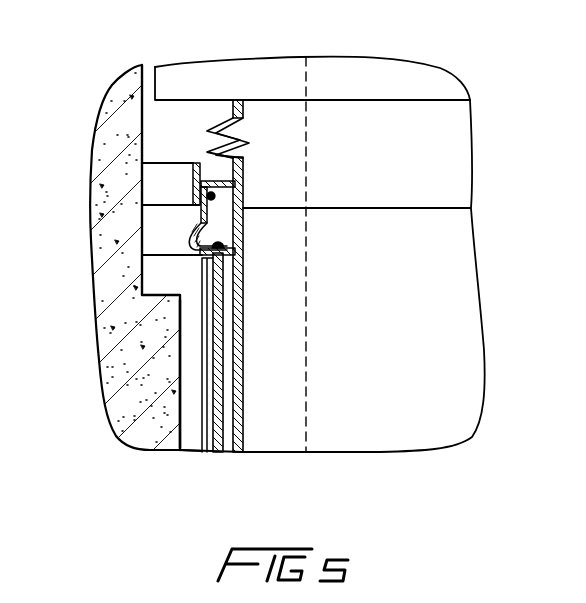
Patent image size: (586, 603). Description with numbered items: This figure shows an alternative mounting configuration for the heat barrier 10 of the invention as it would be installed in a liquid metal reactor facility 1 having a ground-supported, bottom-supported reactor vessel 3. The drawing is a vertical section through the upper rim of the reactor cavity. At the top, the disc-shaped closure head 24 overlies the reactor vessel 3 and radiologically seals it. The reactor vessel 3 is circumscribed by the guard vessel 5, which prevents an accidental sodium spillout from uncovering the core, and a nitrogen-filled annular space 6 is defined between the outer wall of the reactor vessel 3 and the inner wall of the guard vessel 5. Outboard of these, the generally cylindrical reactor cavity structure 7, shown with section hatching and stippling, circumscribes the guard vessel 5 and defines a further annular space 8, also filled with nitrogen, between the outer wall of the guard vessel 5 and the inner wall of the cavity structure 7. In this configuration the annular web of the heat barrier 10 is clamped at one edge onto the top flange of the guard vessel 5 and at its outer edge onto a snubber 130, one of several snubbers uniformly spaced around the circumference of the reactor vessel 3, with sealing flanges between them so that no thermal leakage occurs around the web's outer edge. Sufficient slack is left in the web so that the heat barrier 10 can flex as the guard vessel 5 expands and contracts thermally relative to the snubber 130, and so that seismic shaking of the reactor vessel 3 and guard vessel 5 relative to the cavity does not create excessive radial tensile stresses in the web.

The liquid metal reactor facility 1 is at (100, 99).
The closure head 24 is at (270, 70).
The reactor vessel 3 is at (240, 408).
The guard vessel 5 is at (215, 322).
The annular space 6 is at (228, 328).
The reactor cavity structure 7 is at (181, 380).
The annular space 8 is at (192, 432).
The heat barrier 10 is at (189, 234).
The snubber 130 is at (188, 188).